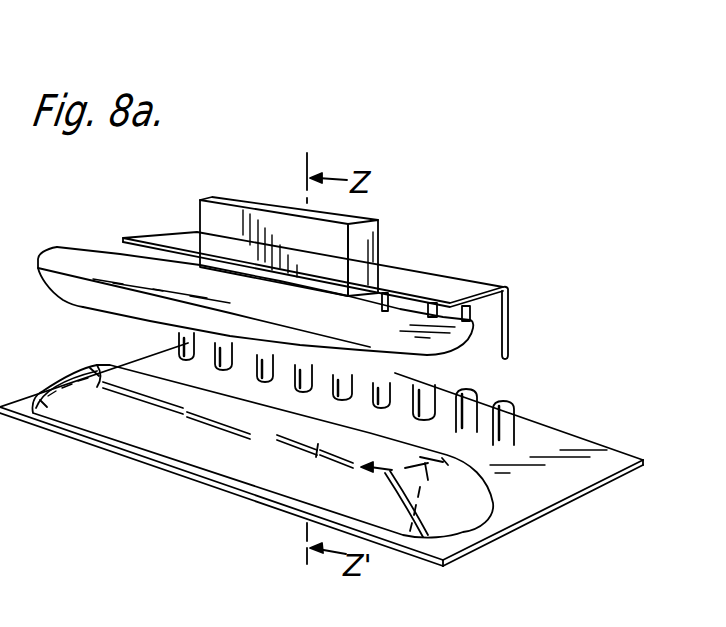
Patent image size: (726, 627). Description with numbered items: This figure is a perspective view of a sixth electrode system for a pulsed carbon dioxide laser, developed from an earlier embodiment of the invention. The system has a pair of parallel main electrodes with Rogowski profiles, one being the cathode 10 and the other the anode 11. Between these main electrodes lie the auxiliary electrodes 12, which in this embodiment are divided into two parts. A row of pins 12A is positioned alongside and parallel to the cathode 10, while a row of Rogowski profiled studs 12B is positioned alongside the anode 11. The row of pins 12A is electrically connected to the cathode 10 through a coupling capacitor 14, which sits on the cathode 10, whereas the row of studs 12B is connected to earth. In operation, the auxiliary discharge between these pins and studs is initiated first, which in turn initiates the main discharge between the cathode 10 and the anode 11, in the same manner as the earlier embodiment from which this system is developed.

The cathode 10 is at (71, 256).
The anode 11 is at (70, 373).
The auxiliary electrodes 12 is at (353, 338).
The row of pins 12A is at (508, 322).
The row of Rogowski profiled studs 12B is at (514, 417).
The coupling capacitor 14 is at (243, 205).